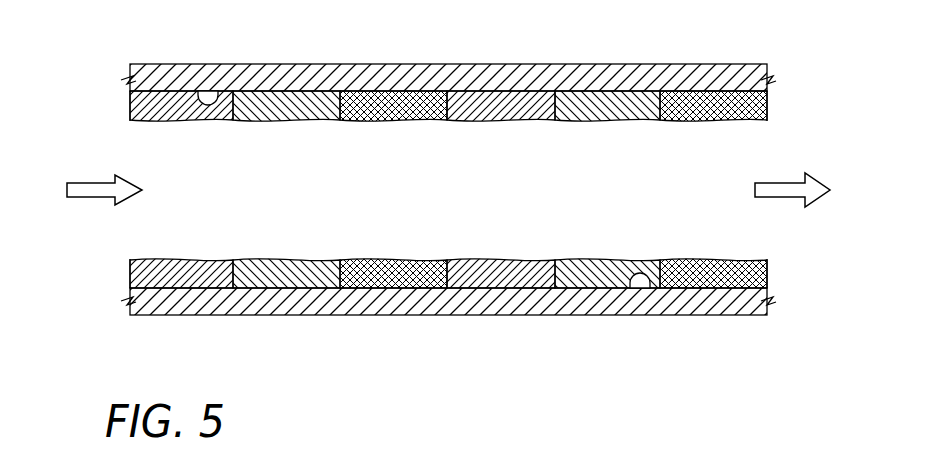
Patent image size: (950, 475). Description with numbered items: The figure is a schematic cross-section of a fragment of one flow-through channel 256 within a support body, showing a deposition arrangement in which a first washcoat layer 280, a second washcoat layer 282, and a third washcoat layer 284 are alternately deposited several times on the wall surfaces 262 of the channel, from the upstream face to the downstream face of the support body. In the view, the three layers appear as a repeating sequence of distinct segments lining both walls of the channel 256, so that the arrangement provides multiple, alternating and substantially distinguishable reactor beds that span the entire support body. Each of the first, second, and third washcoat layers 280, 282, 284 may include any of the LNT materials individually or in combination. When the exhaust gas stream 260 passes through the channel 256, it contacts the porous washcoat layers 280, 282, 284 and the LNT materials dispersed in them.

The channel 256 is at (204, 185).
The exhaust gas stream 260 is at (88, 190).
The wall surfaces 262 is at (212, 98).
The first washcoat layer 280 is at (503, 100).
The second washcoat layer 282 is at (611, 100).
The third washcoat layer 284 is at (716, 100).